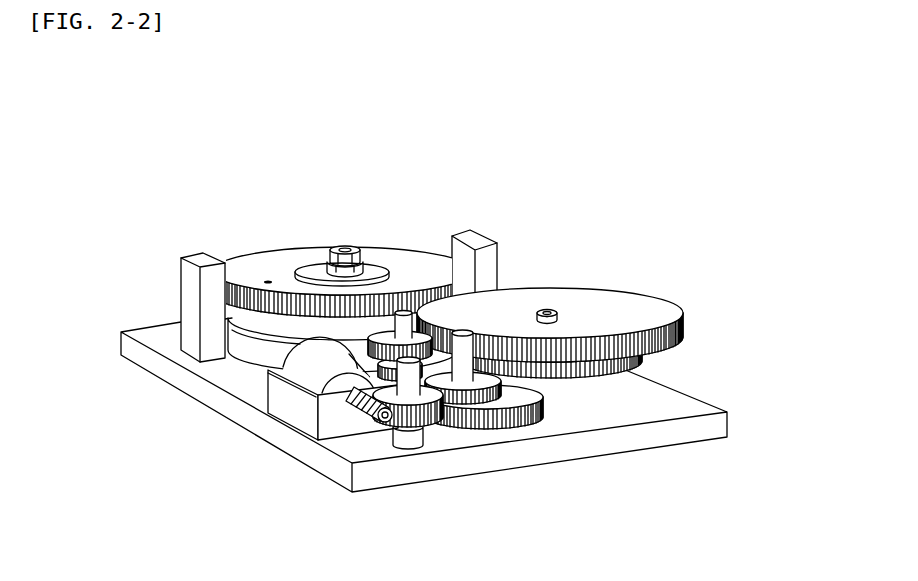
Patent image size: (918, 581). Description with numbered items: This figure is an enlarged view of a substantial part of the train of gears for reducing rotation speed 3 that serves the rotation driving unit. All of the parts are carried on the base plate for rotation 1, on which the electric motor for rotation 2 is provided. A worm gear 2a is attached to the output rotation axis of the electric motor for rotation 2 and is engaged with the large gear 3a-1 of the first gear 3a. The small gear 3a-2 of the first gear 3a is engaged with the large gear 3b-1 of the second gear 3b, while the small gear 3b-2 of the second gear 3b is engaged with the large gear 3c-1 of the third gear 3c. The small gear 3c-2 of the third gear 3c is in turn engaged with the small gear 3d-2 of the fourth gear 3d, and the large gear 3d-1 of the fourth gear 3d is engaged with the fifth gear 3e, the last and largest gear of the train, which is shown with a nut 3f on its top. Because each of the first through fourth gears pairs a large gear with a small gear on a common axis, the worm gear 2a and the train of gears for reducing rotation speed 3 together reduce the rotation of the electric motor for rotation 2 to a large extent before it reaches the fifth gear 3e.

The base plate for rotation 1 is at (280, 433).
The electric motor for rotation 2 is at (313, 367).
The worm gear 2a is at (363, 412).
The train of gears for reducing rotation speed 3 is at (517, 350).
The first gear 3a is at (463, 460).
The large gear of the first gear 3a-1 is at (430, 430).
The small gear of the first gear 3a-2 is at (413, 430).
The second gear 3b is at (564, 440).
The large gear of the second gear 3b-1 is at (530, 422).
The small gear of the second gear 3b-2 is at (510, 427).
The third gear 3c is at (458, 259).
The large gear of the third gear 3c-1 is at (355, 342).
The small gear of the third gear 3c-2 is at (406, 302).
The fourth gear 3d is at (619, 342).
The large gear of the fourth gear 3d-1 is at (678, 347).
The small gear of the fourth gear 3d-2 is at (637, 375).
The fifth gear 3e is at (267, 268).
The output shaft nut 3f is at (347, 246).